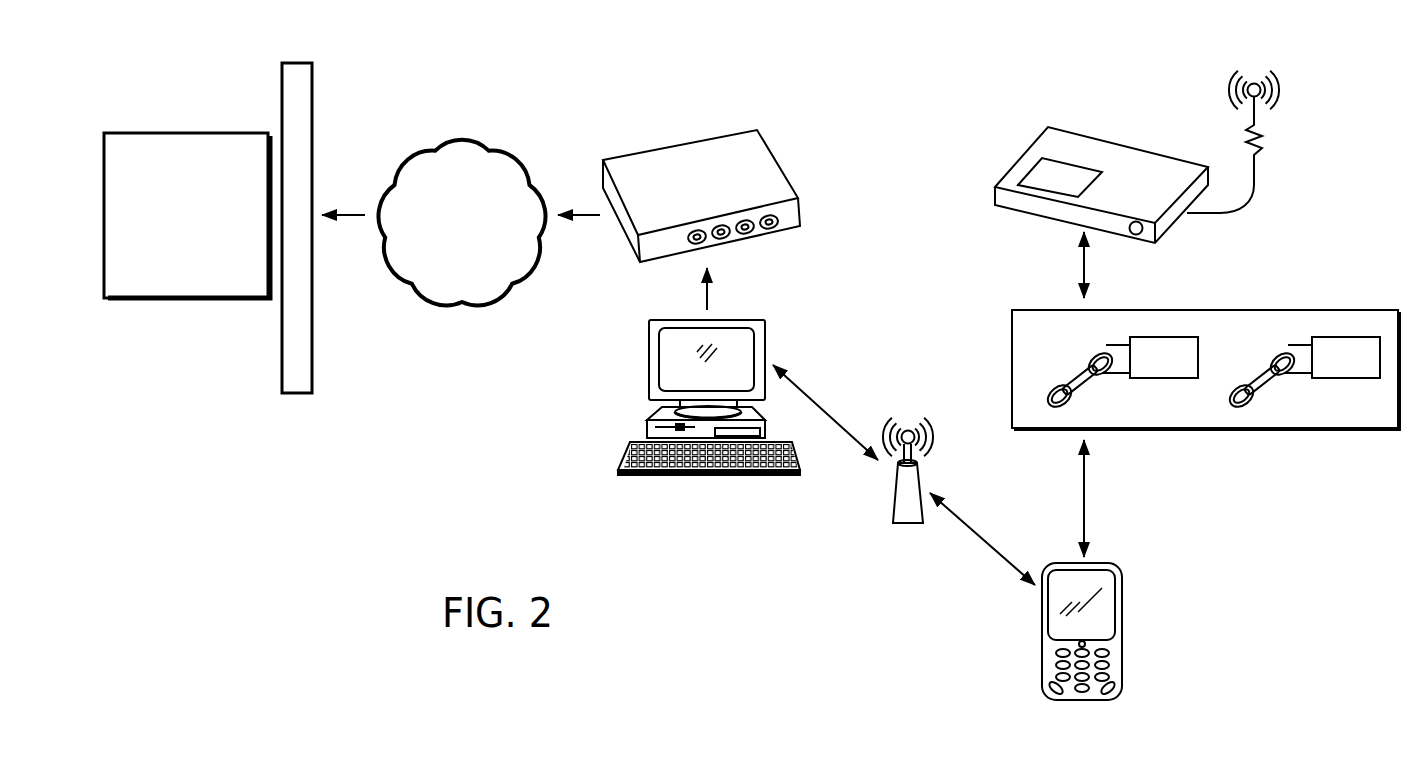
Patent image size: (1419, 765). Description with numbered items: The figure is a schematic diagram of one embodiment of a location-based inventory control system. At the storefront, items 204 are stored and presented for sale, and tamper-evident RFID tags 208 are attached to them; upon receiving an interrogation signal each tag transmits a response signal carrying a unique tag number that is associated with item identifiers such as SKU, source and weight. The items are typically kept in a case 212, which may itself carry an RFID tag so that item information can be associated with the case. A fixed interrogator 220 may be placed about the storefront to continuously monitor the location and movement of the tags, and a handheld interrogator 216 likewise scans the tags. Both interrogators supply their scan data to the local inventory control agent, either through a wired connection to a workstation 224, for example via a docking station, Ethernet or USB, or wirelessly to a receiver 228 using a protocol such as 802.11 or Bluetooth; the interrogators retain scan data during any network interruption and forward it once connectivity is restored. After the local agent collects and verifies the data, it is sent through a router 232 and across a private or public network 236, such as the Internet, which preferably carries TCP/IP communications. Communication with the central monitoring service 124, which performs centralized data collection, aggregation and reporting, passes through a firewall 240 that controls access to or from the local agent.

The central monitoring service 124 is at (168, 268).
The firewall 240 is at (282, 351).
The network 236 is at (477, 257).
The router 232 is at (684, 144).
The workstation 224 is at (688, 476).
The receiver 228 is at (908, 526).
The fixed interrogator 220 is at (1256, 181).
The case 212 is at (1059, 345).
The tamper-evident RFID tag 208 is at (1343, 337).
The item 204 is at (1252, 404).
The interrogator 216 is at (1042, 654).